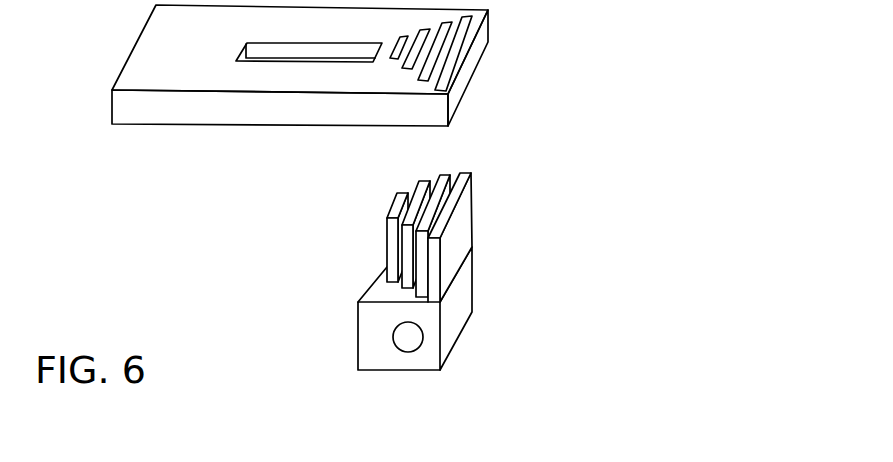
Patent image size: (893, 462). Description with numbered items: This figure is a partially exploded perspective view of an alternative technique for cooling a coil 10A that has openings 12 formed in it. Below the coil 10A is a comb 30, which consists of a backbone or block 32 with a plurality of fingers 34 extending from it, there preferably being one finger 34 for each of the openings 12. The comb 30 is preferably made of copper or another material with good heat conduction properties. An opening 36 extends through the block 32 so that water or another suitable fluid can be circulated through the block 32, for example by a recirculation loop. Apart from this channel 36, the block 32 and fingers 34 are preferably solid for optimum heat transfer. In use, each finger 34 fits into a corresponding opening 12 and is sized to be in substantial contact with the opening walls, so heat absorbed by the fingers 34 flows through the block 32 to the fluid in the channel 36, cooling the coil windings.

The coil 10A is at (190, 141).
The openings 12 is at (461, 36).
The comb 30 is at (373, 334).
The block 32 is at (458, 299).
The fingers 34 is at (473, 210).
The opening 36 is at (405, 338).